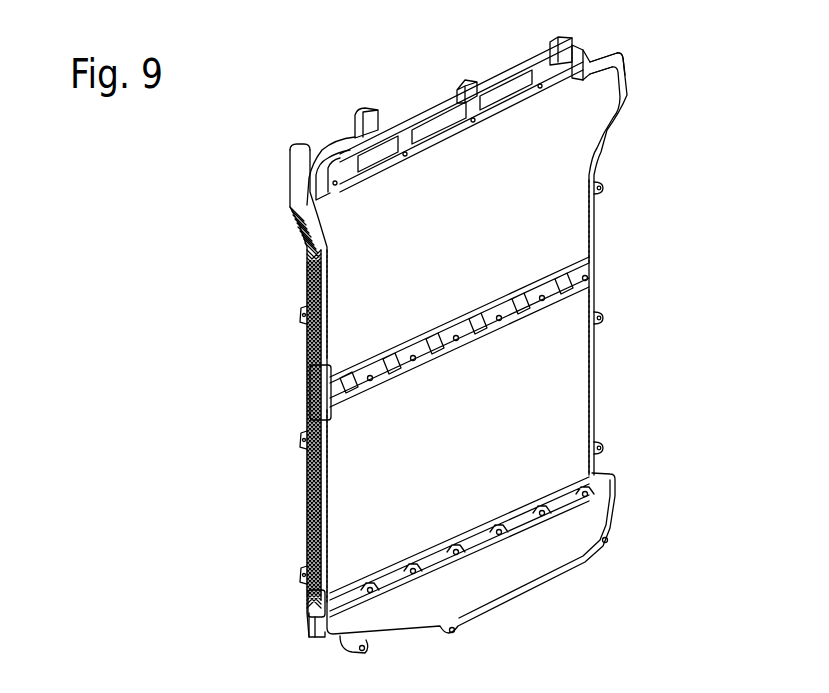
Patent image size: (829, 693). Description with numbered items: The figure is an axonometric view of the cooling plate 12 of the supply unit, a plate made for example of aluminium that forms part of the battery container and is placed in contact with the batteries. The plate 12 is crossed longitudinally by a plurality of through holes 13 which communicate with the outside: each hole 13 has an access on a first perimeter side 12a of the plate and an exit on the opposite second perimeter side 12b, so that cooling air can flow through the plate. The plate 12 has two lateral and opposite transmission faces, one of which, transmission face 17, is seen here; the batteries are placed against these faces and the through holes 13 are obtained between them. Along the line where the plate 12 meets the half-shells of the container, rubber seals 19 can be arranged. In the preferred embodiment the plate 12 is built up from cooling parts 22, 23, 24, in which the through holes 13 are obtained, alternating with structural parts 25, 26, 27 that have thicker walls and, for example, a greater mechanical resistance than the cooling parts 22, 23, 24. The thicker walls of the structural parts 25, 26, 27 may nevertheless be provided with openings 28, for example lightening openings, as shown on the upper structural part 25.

The cooling plate 12 is at (154, 177).
The first perimeter side 12a is at (290, 503).
The second perimeter side 12b is at (620, 339).
The through holes 13 is at (310, 294).
The transmission face 17 is at (546, 210).
The rubber seals 19 is at (628, 75).
The cooling part 22 is at (471, 248).
The cooling part 23 is at (471, 455).
The cooling part 24 is at (498, 585).
The structural part 25 is at (428, 81).
The structural part 26 is at (295, 408).
The structural part 27 is at (283, 597).
The openings 28 is at (379, 136).